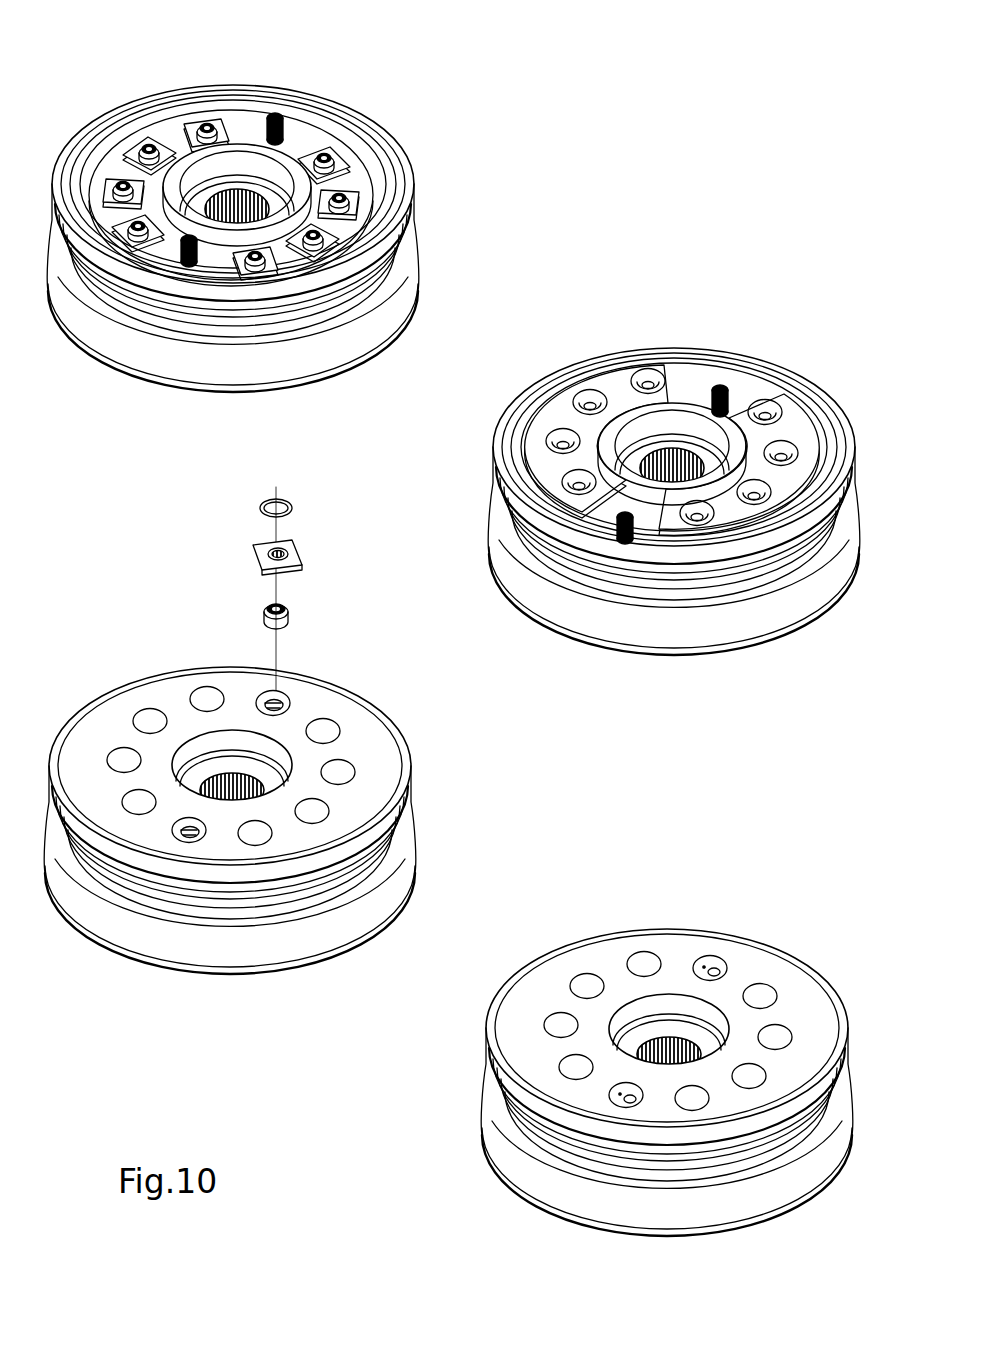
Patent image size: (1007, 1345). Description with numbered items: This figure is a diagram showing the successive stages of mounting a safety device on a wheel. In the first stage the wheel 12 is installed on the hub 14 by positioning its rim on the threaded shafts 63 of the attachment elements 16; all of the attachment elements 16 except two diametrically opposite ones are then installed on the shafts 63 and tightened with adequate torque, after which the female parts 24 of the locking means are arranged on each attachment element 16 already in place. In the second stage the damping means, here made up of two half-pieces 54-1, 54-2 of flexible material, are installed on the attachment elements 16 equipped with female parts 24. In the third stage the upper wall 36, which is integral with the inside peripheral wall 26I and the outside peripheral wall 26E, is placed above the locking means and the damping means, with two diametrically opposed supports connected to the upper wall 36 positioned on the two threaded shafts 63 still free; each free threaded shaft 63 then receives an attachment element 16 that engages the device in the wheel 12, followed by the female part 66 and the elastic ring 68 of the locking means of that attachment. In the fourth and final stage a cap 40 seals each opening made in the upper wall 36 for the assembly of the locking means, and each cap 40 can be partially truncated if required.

The wheel 12 is at (364, 317).
The hub 14 is at (245, 155).
The attachment element 16 is at (137, 227).
The female part 24 is at (313, 263).
The threaded shaft 63 is at (321, 152).
The half-piece 54-1 is at (608, 383).
The half-piece 54-2 is at (802, 427).
The elastic ring 68 is at (260, 508).
The female part 66 is at (296, 553).
The inside peripheral wall 26I is at (198, 739).
The outside peripheral wall 26E is at (350, 830).
The upper wall 36 is at (348, 741).
The cap 40 is at (708, 964).